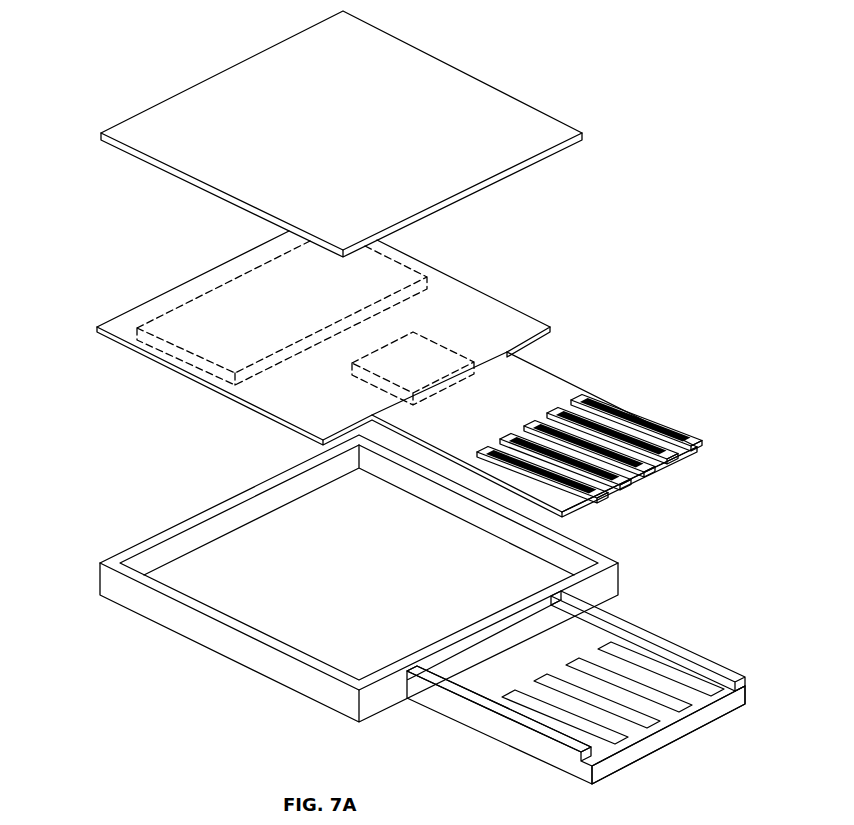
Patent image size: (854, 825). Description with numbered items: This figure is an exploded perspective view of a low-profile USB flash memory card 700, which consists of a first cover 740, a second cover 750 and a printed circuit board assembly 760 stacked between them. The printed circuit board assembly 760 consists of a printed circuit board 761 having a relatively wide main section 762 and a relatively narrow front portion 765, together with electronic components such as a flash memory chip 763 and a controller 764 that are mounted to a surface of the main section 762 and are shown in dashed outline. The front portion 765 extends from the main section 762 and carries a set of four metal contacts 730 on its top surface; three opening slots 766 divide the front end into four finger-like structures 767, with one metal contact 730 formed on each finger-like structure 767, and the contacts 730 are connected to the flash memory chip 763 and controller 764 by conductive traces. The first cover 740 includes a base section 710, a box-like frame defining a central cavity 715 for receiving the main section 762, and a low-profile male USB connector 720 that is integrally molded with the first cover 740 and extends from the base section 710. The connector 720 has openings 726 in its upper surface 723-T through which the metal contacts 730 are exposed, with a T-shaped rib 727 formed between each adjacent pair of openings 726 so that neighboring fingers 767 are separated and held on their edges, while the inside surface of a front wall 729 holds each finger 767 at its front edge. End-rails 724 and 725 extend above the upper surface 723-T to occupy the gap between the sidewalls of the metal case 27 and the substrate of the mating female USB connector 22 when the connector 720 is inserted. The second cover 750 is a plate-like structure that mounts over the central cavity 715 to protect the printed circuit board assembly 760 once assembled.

The low-profile USB flash memory card 700 is at (100, 26).
The second cover 750 is at (531, 98).
The printed circuit board assembly 760 is at (421, 382).
The printed circuit board 761 is at (424, 258).
The main section 762 is at (493, 308).
The flash memory chip 763 is at (473, 291).
The controller 764 is at (570, 372).
The front portion 765 is at (569, 378).
The metal contacts 730 is at (611, 454).
The opening slots 766 is at (611, 462).
The finger-like structures 767 is at (657, 457).
The first cover 740 is at (435, 630).
The base section 710 is at (359, 578).
The central cavity 715 is at (326, 580).
The low-profile male USB connector 720 is at (460, 708).
The upper surface 723-T is at (652, 684).
The end-rail 724 is at (513, 724).
The end-rail 725 is at (663, 647).
The openings 726 is at (652, 684).
The T-shaped rib 727 is at (677, 703).
The front wall 729 is at (607, 768).
The female USB connector 22 is at (160, 824).
The metal case 27 is at (236, 822).